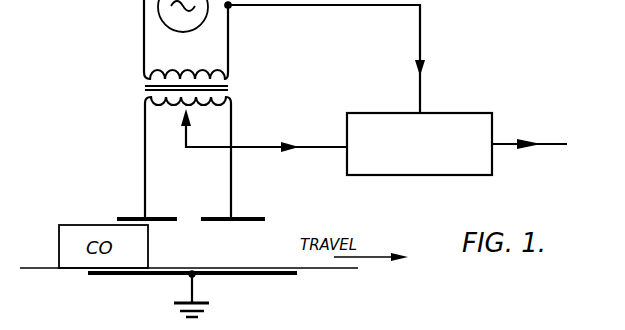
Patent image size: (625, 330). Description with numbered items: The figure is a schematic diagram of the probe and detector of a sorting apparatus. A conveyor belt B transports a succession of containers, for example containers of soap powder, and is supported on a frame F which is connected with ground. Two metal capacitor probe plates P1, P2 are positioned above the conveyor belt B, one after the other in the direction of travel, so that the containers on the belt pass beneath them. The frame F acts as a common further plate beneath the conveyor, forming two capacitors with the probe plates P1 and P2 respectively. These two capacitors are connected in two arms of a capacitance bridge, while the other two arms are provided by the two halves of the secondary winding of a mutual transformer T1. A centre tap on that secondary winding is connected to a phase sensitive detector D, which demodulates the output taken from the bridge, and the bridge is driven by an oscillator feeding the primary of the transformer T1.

The mutual transformer T1 is at (147, 86).
The first capacitor probe plate P1 is at (131, 216).
The second capacitor probe plate P2 is at (250, 217).
The phase sensitive detector D is at (378, 113).
The conveyor belt B is at (343, 267).
The frame F is at (258, 275).